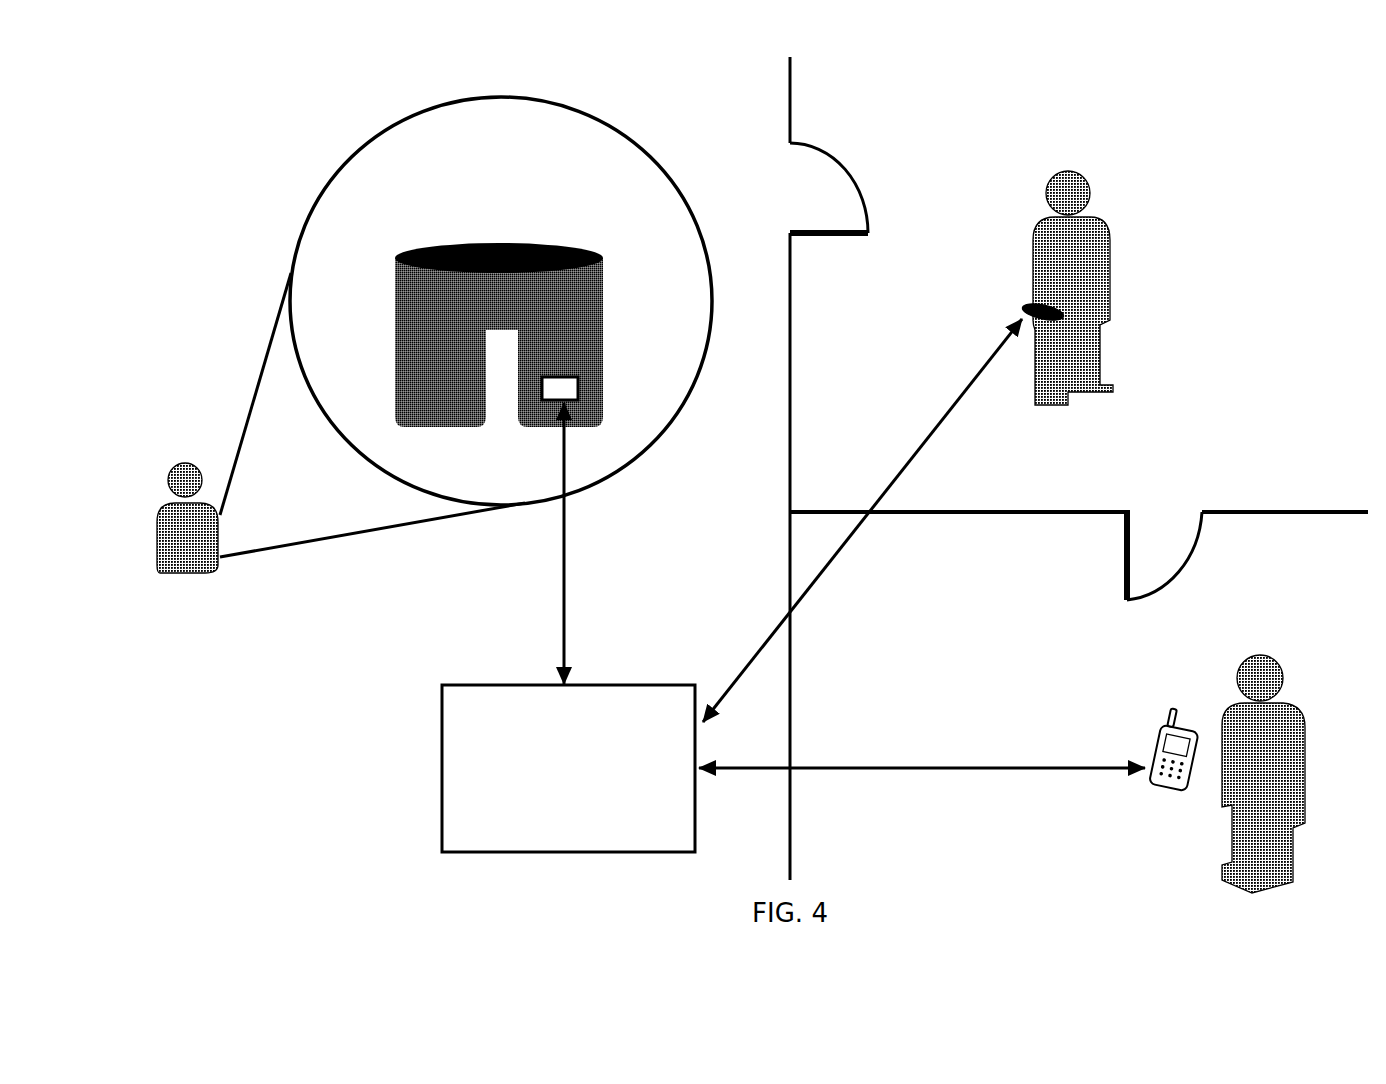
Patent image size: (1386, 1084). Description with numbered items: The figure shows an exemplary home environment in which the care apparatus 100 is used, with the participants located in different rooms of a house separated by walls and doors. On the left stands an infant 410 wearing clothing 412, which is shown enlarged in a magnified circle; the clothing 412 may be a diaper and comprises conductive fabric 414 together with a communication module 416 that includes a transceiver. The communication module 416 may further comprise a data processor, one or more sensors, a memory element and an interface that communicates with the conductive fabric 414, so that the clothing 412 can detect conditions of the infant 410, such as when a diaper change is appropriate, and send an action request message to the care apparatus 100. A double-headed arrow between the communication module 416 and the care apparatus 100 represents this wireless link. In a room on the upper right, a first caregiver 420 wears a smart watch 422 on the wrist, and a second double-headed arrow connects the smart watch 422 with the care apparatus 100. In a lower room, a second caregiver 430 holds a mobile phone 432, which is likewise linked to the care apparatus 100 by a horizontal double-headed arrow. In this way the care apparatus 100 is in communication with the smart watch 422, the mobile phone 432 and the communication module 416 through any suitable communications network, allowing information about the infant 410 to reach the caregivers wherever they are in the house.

The care apparatus 100 is at (553, 795).
The infant 410 is at (188, 450).
The clothing 412 is at (472, 230).
The conductive fabric 414 is at (580, 310).
The communication module 416 is at (580, 385).
The first caregiver 420 is at (1068, 163).
The smart watch 422 is at (1028, 307).
The second caregiver 430 is at (1265, 647).
The mobile phone 432 is at (1140, 725).